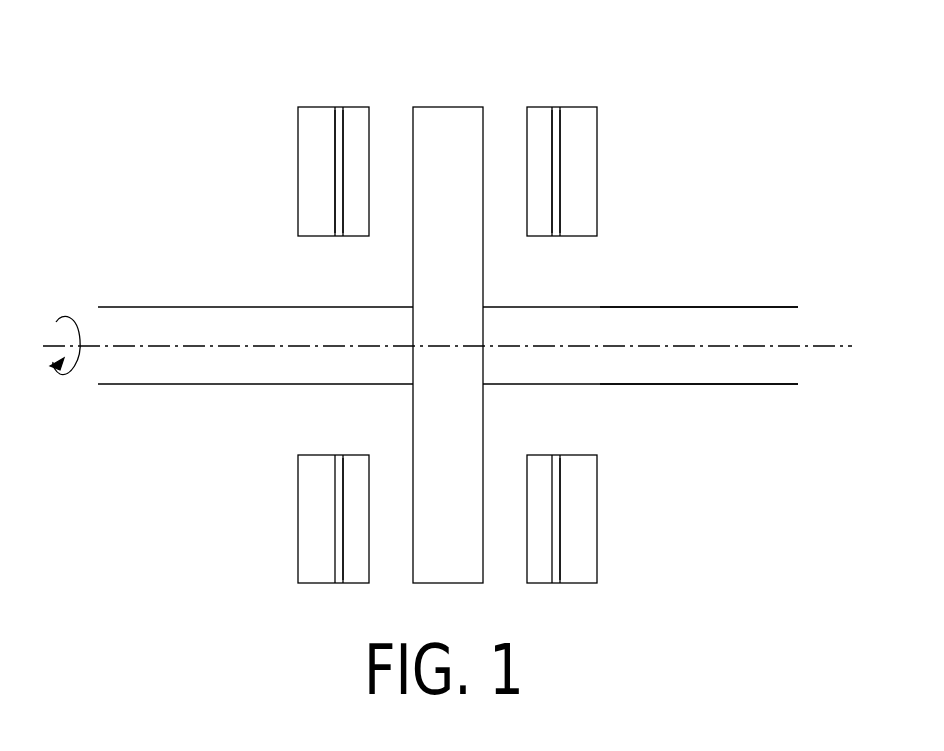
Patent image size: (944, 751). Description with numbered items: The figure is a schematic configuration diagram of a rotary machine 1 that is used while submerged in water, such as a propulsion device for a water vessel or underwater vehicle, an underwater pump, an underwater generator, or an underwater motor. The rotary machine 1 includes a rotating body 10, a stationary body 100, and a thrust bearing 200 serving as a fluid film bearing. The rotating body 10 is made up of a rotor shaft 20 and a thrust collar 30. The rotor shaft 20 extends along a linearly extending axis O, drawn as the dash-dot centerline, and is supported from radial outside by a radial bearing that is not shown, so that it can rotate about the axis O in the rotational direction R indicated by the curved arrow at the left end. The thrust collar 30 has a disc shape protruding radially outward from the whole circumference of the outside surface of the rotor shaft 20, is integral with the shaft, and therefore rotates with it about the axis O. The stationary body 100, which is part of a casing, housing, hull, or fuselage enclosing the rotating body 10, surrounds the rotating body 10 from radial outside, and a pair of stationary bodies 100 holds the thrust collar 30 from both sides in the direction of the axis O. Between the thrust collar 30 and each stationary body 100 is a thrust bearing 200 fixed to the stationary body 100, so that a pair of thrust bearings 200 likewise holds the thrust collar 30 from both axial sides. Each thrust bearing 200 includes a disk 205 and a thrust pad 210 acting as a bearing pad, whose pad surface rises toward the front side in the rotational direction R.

The rotary machine 1 is at (683, 118).
The rotating body 10 is at (741, 307).
The rotor shaft 20 is at (665, 325).
The thrust collar 30 is at (463, 267).
The stationary body 100 is at (318, 172).
The thrust bearing 200 is at (357, 106).
The disk 205 is at (335, 212).
The thrust pad 210 is at (362, 148).
The rotational direction R is at (65, 316).
The axis O is at (820, 348).